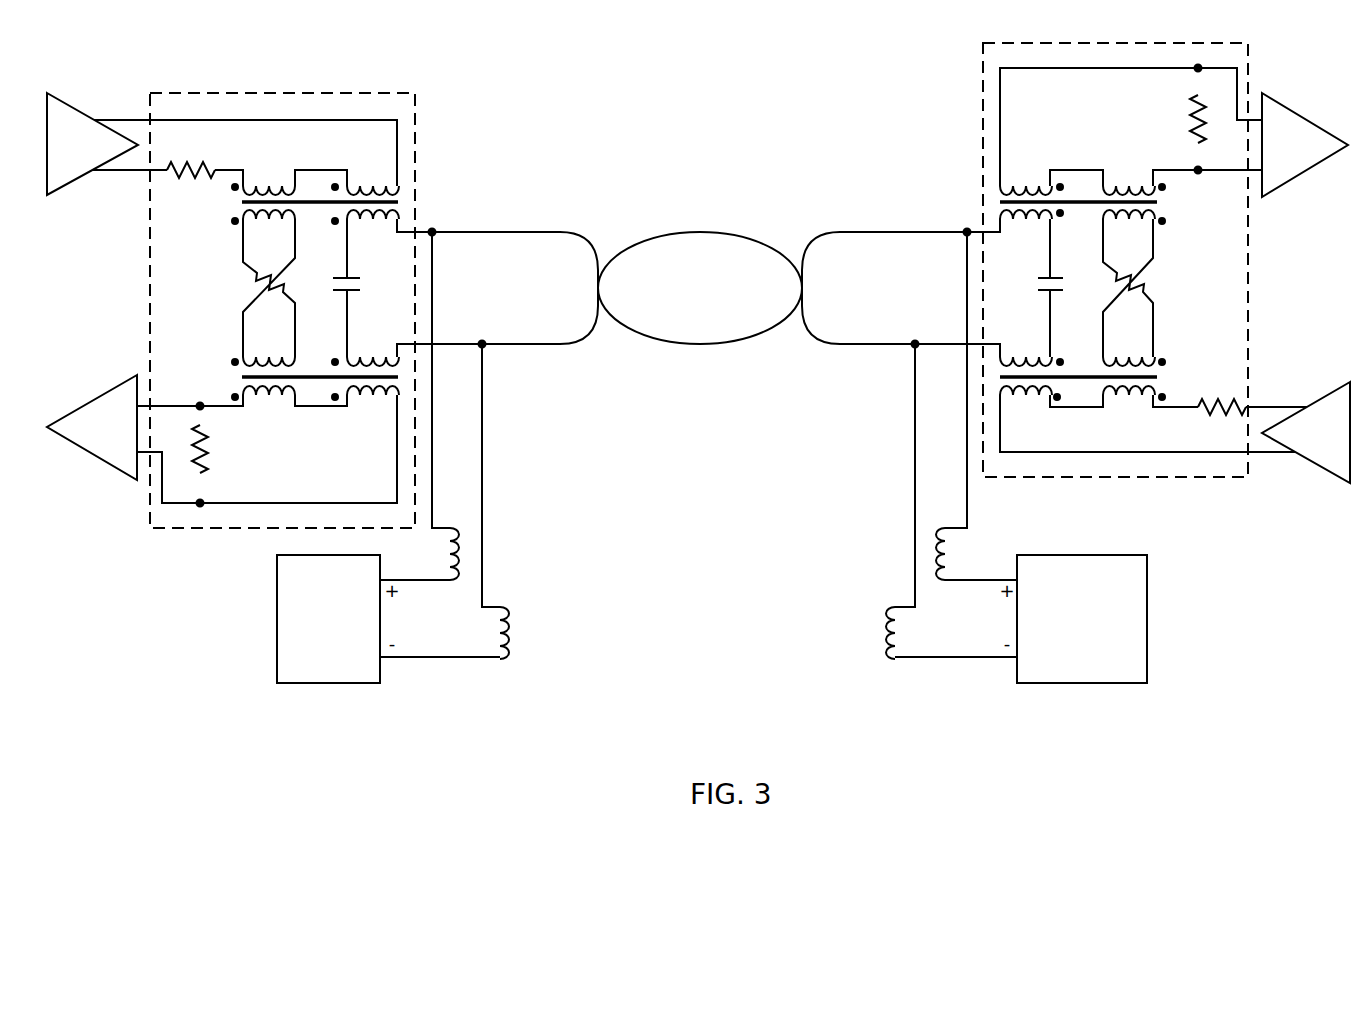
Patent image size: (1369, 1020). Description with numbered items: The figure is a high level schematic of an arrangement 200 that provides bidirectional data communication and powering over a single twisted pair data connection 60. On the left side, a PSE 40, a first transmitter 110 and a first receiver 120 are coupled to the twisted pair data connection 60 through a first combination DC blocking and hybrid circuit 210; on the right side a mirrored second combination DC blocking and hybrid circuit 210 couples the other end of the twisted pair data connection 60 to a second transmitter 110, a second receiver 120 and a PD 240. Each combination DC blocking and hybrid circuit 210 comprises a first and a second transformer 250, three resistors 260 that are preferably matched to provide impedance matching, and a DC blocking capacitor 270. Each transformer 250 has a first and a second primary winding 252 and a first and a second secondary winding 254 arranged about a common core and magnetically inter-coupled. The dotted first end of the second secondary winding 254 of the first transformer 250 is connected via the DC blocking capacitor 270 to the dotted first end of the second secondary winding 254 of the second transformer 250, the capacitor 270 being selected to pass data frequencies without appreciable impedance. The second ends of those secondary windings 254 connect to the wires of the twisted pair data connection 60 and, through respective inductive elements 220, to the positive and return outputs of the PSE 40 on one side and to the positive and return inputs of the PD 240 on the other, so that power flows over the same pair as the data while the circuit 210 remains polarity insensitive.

The arrangement 200 is at (782, 95).
The transmitter 110 is at (72, 103).
The receiver 120 is at (95, 457).
The combination DC blocking and hybrid circuit 210 is at (418, 157).
The transformer 250 is at (403, 202).
The primary winding 252 is at (258, 186).
The secondary winding 254 is at (272, 220).
The resistor 260 is at (173, 160).
The DC blocking capacitor 270 is at (367, 281).
The inductive element 220 is at (447, 560).
The twisted pair data connection 60 is at (700, 345).
The PSE 40 is at (328, 683).
The PD 240 is at (1097, 683).